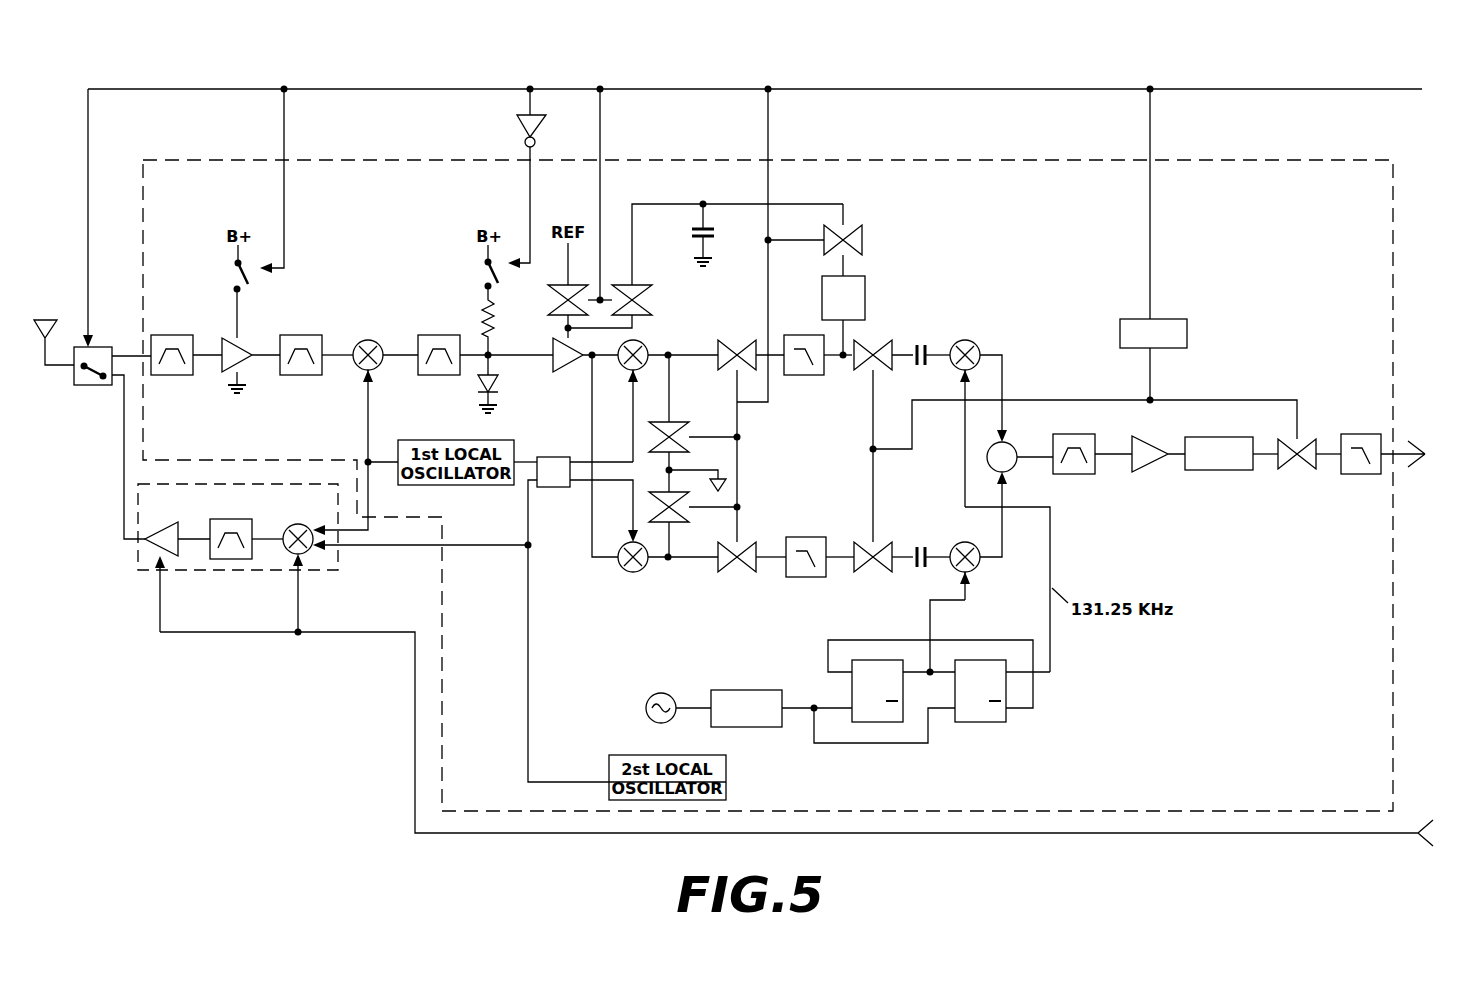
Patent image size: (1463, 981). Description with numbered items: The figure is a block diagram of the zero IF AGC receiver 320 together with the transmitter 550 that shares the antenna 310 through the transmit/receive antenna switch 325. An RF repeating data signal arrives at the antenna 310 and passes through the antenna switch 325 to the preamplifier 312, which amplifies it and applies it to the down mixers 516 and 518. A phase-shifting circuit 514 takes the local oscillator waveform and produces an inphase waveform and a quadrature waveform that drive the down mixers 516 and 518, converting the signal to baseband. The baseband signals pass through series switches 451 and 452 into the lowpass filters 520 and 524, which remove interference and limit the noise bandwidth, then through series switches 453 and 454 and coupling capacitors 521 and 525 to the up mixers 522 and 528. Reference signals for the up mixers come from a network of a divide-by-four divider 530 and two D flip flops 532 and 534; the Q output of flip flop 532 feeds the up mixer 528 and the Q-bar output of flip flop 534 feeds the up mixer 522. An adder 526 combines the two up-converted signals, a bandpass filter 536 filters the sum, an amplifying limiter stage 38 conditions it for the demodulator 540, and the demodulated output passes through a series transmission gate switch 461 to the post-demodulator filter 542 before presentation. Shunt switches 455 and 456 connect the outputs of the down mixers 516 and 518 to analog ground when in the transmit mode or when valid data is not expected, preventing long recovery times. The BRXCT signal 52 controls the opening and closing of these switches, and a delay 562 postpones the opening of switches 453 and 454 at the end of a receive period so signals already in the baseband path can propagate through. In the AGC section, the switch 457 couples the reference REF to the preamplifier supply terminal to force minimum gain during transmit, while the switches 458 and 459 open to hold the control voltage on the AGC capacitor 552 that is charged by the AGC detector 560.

The BRXCT signal 52 is at (763, 218).
The receiver 320 is at (1018, 154).
The antenna 310 is at (43, 318).
The antenna switch 325 is at (90, 388).
The preamplifier 312 is at (572, 375).
The switch 457 is at (552, 302).
The switch 458 is at (644, 283).
The AGC capacitor 552 is at (716, 243).
The switch 459 is at (862, 228).
The AGC detector 560 is at (870, 283).
The down mixer 516 is at (648, 342).
The series switch 451 is at (740, 334).
The lowpass filter 520 is at (800, 336).
The series switch 453 is at (882, 337).
The coupling capacitor 521 is at (918, 366).
The up mixer 522 is at (980, 346).
The delay 562 is at (1115, 316).
The shunt switch 455 is at (678, 420).
The shunt switch 456 is at (680, 521).
The phase-shifting circuit 514 is at (553, 490).
The down mixer 518 is at (628, 576).
The series switch 452 is at (736, 576).
The lowpass filter 524 is at (808, 534).
The series switch 454 is at (872, 574).
The coupling capacitor 525 is at (926, 541).
The up mixer 528 is at (978, 570).
The adder 526 is at (1014, 440).
The bandpass filter 536 is at (1073, 480).
The amplifier 38 is at (1150, 473).
The demodulator 540 is at (1220, 472).
The switch 461 is at (1300, 476).
The post-demodulator filter 542 is at (1360, 431).
The transmitter 550 is at (135, 570).
The divide-by-four divider 530 is at (748, 688).
The D flip flop 532 is at (866, 727).
The D flip flop 534 is at (974, 724).